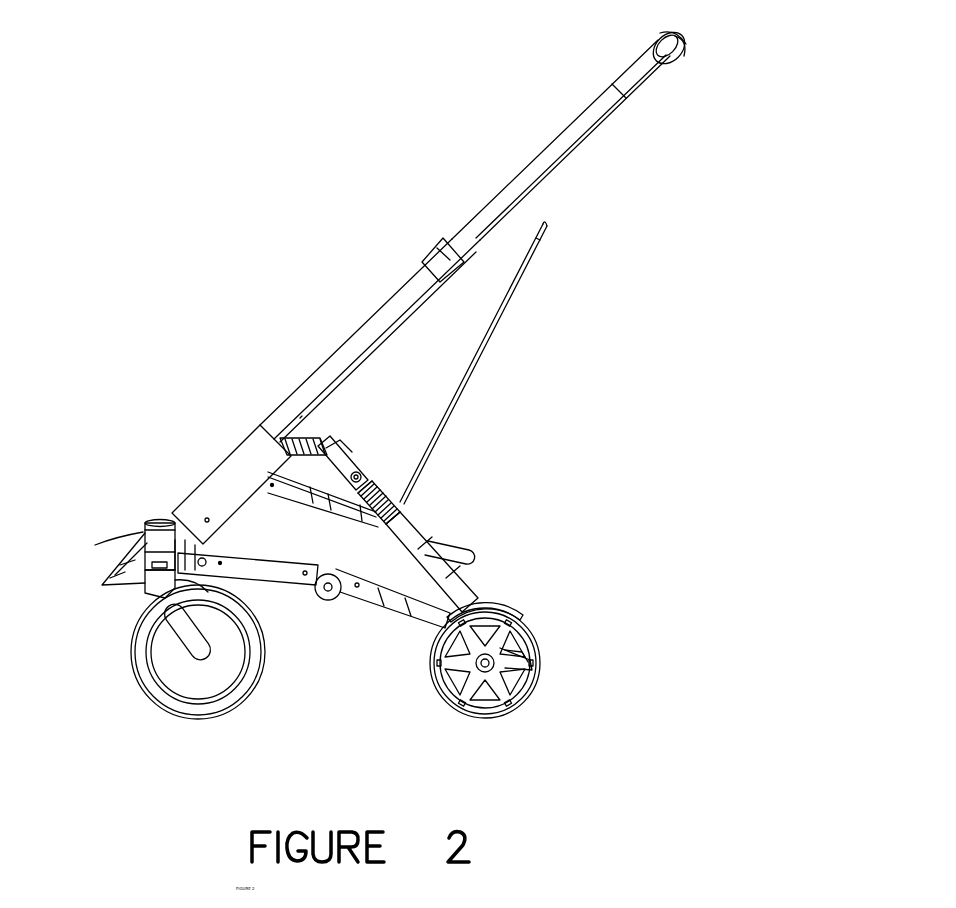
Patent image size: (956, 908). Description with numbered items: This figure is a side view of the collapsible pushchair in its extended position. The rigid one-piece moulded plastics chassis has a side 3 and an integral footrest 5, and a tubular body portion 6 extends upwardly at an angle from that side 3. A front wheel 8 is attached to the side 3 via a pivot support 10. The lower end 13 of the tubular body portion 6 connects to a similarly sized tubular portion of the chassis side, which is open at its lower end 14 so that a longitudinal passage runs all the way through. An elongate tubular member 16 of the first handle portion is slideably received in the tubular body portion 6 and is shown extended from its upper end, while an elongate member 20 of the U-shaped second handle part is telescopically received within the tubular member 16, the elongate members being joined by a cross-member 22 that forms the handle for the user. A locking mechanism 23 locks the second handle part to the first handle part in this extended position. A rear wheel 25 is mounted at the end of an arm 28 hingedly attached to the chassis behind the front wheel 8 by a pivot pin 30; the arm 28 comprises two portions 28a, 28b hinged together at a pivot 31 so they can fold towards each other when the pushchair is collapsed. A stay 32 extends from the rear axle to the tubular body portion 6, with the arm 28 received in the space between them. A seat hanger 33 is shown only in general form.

The side of the chassis 3 is at (167, 519).
The footrest 5 is at (107, 581).
The tubular body portion 6 is at (222, 493).
The front wheel 8 is at (140, 674).
The pivot support 10 is at (95, 545).
The lower end of tubular body portion 13 is at (199, 508).
The lower end of chassis tubular portion 14 is at (142, 572).
The elongate tubular member 16 is at (353, 348).
The elongate member 20 is at (566, 148).
The cross-member 22 is at (688, 42).
The locking mechanism 23 is at (444, 262).
The rear wheel 25 is at (536, 641).
The arm 28 is at (314, 628).
The first arm portion 28a is at (272, 572).
The second arm portion 28b is at (415, 605).
The pivot pin 30 is at (212, 553).
The pivot 31 is at (330, 590).
The stay 32 is at (428, 515).
The seat hanger 33 is at (355, 513).